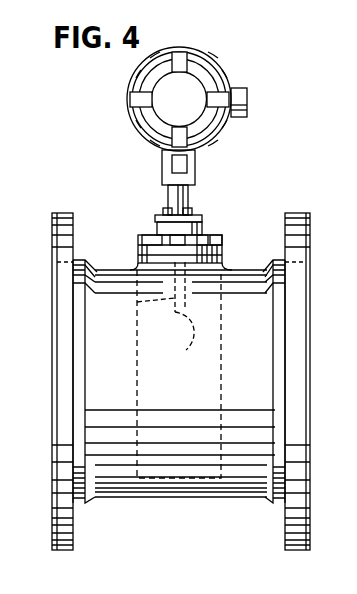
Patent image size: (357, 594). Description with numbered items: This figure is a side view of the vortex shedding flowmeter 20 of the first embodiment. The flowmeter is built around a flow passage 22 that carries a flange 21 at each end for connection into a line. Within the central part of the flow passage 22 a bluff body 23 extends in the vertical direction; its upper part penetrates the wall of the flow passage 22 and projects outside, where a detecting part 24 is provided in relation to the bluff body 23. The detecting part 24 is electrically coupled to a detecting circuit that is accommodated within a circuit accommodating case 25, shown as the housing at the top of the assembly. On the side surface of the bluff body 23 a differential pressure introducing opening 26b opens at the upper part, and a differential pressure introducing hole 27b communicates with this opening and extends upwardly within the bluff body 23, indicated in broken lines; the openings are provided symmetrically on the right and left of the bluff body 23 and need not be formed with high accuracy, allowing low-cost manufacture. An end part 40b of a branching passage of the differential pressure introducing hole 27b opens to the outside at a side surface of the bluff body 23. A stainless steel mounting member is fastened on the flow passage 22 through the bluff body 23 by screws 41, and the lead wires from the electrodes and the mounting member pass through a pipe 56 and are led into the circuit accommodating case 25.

The vortex shedding flowmeter 20 is at (293, 131).
The flange 21 is at (74, 523).
The flow passage 22 is at (178, 498).
The bluff body 23 is at (222, 335).
The detecting part 24 is at (228, 240).
The circuit accommodating case 25 is at (209, 73).
The differential pressure introducing opening 26b is at (178, 350).
The differential pressure introducing hole 27b is at (136, 321).
The end part of branching passage 40b is at (178, 262).
The screws 41 is at (157, 230).
The pipe 56 is at (189, 200).